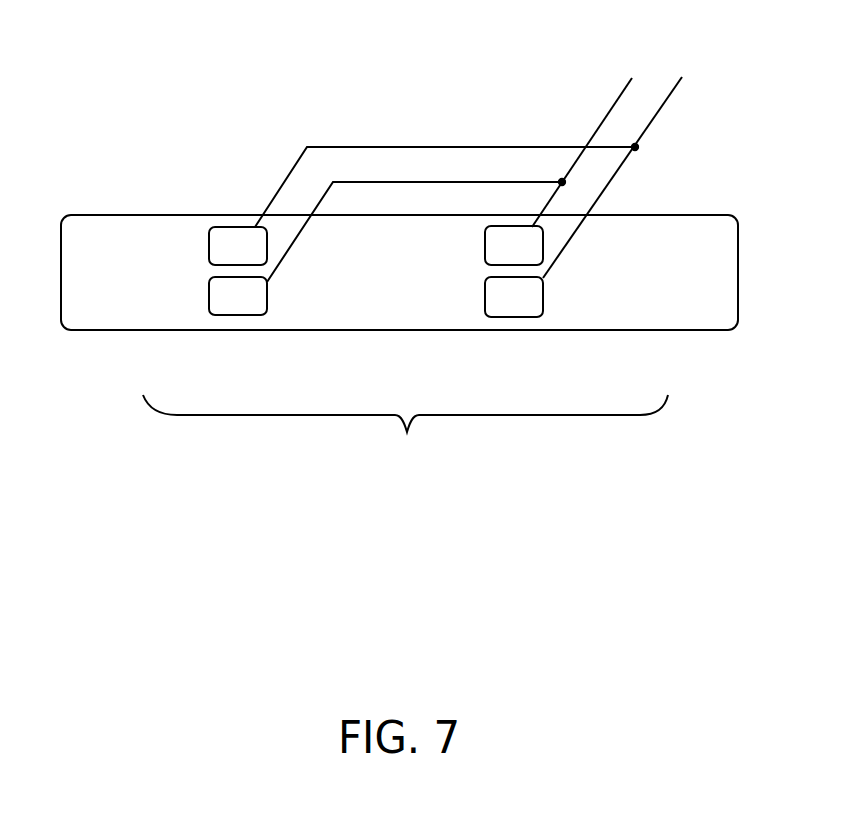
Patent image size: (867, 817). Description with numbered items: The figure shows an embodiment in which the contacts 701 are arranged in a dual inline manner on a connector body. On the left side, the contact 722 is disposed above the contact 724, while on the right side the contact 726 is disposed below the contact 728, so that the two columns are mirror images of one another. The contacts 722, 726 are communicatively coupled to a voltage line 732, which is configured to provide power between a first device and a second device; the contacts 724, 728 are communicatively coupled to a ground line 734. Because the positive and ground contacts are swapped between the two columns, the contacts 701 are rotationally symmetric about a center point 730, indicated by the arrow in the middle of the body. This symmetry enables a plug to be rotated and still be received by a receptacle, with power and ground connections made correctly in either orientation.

The contacts 701 is at (399, 343).
The contact 722 is at (210, 228).
The contact 724 is at (233, 317).
The contact 726 is at (513, 317).
The contact 728 is at (485, 232).
The center point 730 is at (386, 283).
The voltage line 732 is at (660, 108).
The ground line 734 is at (632, 78).